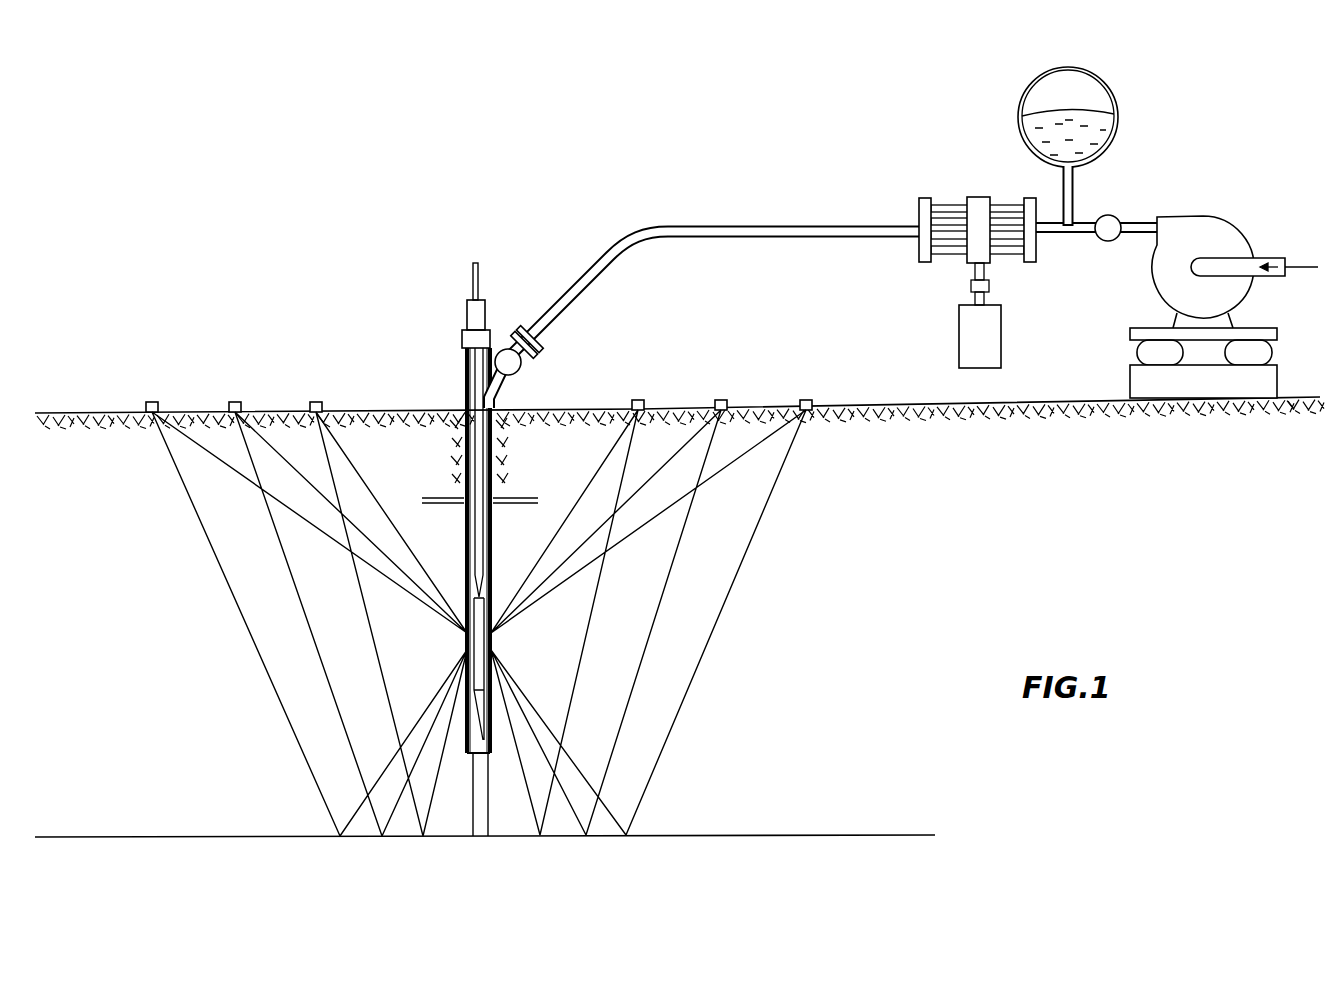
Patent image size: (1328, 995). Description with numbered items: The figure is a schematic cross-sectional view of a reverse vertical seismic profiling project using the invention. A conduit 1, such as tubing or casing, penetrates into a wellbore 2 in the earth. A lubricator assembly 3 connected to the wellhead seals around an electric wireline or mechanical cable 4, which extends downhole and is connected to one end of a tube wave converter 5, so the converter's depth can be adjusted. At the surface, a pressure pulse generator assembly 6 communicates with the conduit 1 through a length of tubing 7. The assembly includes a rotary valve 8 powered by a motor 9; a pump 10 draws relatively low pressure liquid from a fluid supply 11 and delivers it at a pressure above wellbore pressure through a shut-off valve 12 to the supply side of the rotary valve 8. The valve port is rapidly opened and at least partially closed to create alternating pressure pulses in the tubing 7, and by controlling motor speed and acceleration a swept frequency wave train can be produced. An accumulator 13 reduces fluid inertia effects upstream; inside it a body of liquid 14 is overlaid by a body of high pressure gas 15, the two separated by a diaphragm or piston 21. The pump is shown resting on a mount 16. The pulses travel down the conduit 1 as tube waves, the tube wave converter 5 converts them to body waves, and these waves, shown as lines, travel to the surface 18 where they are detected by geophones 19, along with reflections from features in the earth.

The conduit 1 is at (492, 541).
The wellbore 2 is at (489, 808).
The lubricator assembly 3 is at (466, 320).
The cable 4 is at (473, 276).
The tube wave converter 5 is at (492, 748).
The pressure pulse generator assembly 6 is at (970, 197).
The tubing 7 is at (665, 224).
The rotary valve 8 is at (978, 197).
The motor 9 is at (1003, 335).
The pump 10 is at (1235, 250).
The fluid supply 11 is at (1302, 272).
The shut-off valve 12 is at (1105, 243).
The accumulator 13 is at (1073, 123).
The body of liquid 14 is at (1100, 138).
The body of high pressure gas 15 is at (1100, 96).
The vibration damping mount 16 is at (1134, 352).
The surface 18 is at (877, 405).
The geophones 19 is at (152, 401).
The diaphragm or piston 21 is at (1044, 110).